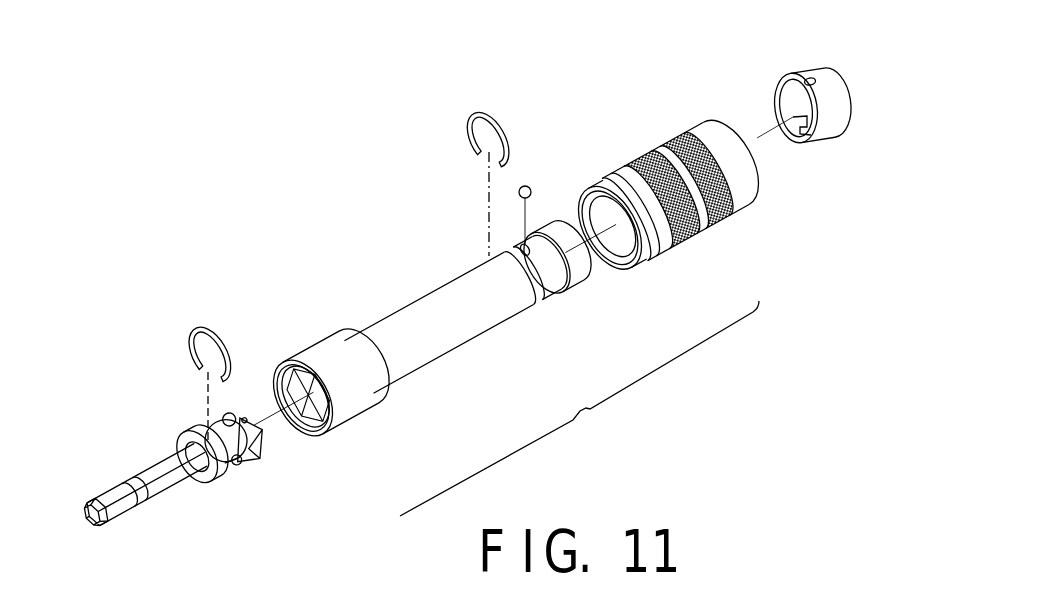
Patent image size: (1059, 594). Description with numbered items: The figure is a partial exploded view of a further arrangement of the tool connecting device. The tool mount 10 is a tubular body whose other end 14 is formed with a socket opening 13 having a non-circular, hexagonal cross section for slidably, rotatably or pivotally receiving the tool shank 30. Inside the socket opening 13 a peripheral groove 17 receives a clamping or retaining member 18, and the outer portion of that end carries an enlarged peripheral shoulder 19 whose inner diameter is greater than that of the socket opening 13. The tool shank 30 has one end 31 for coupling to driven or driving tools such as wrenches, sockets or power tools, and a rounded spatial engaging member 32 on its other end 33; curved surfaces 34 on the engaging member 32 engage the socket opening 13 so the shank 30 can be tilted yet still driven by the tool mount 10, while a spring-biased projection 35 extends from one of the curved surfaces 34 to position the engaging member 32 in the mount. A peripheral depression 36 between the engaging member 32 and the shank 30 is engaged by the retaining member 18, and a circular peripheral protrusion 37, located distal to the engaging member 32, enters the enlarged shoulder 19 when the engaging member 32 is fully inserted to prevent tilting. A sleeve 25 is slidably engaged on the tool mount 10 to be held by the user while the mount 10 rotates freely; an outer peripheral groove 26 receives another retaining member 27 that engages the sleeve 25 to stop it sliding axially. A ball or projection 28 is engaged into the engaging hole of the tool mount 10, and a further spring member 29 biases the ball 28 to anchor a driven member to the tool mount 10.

The tool mount 10 is at (451, 332).
The socket opening 13 is at (280, 378).
The other end 14 is at (309, 344).
The peripheral groove 17 is at (287, 428).
The retaining member 18 is at (195, 333).
The enlarged peripheral shoulder 19 is at (308, 430).
The sleeve 25 is at (688, 214).
The peripheral groove 26 is at (520, 300).
The retaining member 27 is at (480, 117).
The ball or projection 28 is at (528, 184).
The spring member 29 is at (828, 88).
The tool shank 30 is at (168, 487).
The one end 31 is at (113, 530).
The spatial engaging member 32 is at (245, 420).
The other end 33 is at (260, 462).
The curved surfaces 34 is at (240, 468).
The spring-biased projection 35 is at (231, 414).
The peripheral depression 36 is at (233, 460).
The peripheral protrusion 37 is at (197, 433).